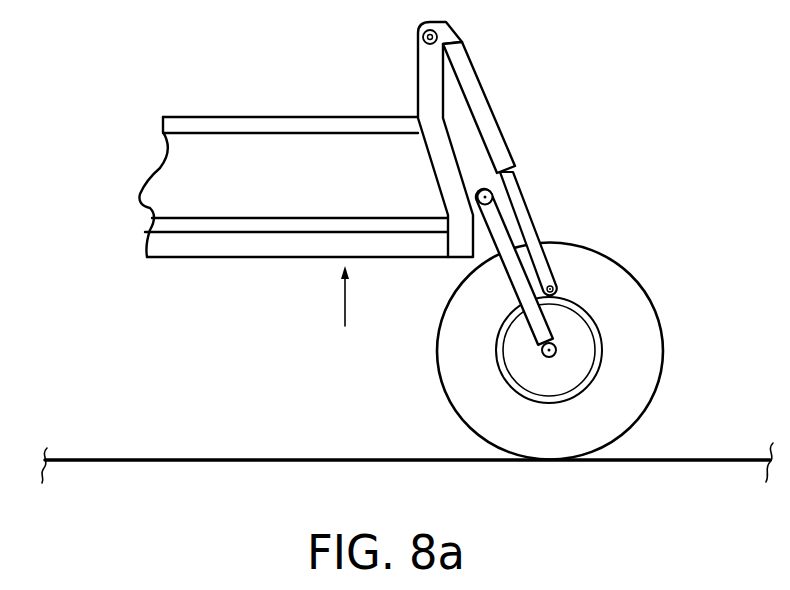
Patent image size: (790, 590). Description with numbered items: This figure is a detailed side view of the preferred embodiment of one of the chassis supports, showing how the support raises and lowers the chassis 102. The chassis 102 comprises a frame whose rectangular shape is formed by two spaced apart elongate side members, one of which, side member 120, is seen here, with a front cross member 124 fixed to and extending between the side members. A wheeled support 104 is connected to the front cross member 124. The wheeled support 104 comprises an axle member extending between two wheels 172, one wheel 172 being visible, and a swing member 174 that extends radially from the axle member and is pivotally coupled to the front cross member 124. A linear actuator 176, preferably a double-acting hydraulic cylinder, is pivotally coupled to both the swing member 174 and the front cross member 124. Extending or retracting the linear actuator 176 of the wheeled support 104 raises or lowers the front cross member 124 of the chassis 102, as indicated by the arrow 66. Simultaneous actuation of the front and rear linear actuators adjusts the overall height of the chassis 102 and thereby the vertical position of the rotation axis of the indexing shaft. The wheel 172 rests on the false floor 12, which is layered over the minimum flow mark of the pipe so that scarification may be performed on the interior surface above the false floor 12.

The false floor 12 is at (167, 464).
The arrow 66 is at (343, 308).
The chassis 102 is at (252, 215).
The wheeled support 104 is at (482, 206).
The side member 120 is at (148, 176).
The front cross member 124 is at (418, 60).
The wheel 172 is at (627, 268).
The swing member 174 is at (514, 273).
The linear actuator 176 is at (488, 92).